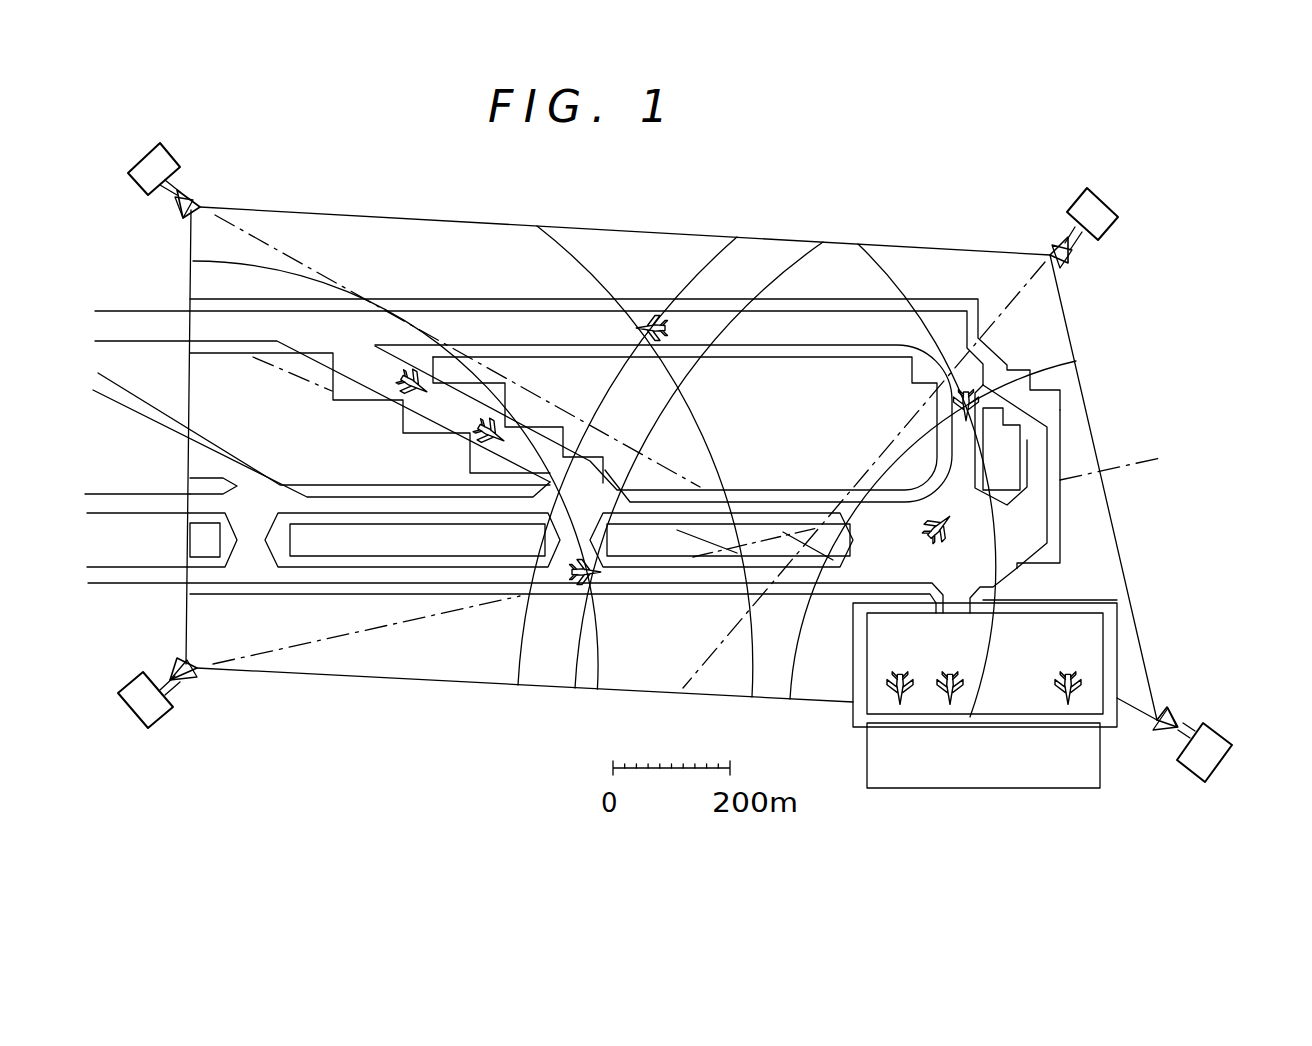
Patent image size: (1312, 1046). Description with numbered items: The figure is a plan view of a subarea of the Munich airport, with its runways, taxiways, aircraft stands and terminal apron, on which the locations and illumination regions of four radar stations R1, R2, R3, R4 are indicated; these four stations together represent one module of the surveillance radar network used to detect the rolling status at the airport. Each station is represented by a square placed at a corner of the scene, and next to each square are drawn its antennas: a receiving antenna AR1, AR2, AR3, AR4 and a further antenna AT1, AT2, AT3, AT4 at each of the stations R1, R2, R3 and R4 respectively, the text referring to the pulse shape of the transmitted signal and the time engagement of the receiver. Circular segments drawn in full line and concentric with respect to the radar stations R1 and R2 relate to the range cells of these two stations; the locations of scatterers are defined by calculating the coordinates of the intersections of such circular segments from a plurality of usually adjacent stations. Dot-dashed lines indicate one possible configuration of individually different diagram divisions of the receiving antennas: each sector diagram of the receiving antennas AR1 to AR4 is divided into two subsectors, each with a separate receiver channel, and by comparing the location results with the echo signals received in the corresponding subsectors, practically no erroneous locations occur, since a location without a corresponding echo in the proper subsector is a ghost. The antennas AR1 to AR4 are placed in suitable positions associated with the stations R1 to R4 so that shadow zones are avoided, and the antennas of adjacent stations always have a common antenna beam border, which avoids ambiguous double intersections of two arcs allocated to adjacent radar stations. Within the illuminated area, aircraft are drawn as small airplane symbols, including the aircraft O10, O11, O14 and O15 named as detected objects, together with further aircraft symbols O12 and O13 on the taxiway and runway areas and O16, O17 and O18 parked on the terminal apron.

The radar station R1 is at (135, 715).
The radar station R2 is at (1218, 775).
The radar station R3 is at (140, 160).
The radar station R4 is at (1102, 205).
The transmitting antenna of station 1 AT1 is at (172, 665).
The transmitting antenna of station 2 AT2 is at (1158, 735).
The transmitting antenna of station 3 AT3 is at (195, 195).
The transmitting antenna of station 4 AT4 is at (1072, 262).
The receiving antenna AR1 is at (196, 680).
The receiving antenna AR2 is at (1172, 712).
The receiving antenna AR3 is at (178, 215).
The receiving antenna AR4 is at (1045, 245).
The aircraft O10 is at (405, 398).
The aircraft O11 is at (480, 445).
The aircraft target 12 O12 is at (650, 318).
The aircraft target 13 O13 is at (592, 582).
The aircraft O14 is at (942, 537).
The aircraft O15 is at (952, 405).
The aircraft target 16 O16 is at (900, 676).
The aircraft target 17 O17 is at (952, 676).
The aircraft target 18 O18 is at (1070, 676).